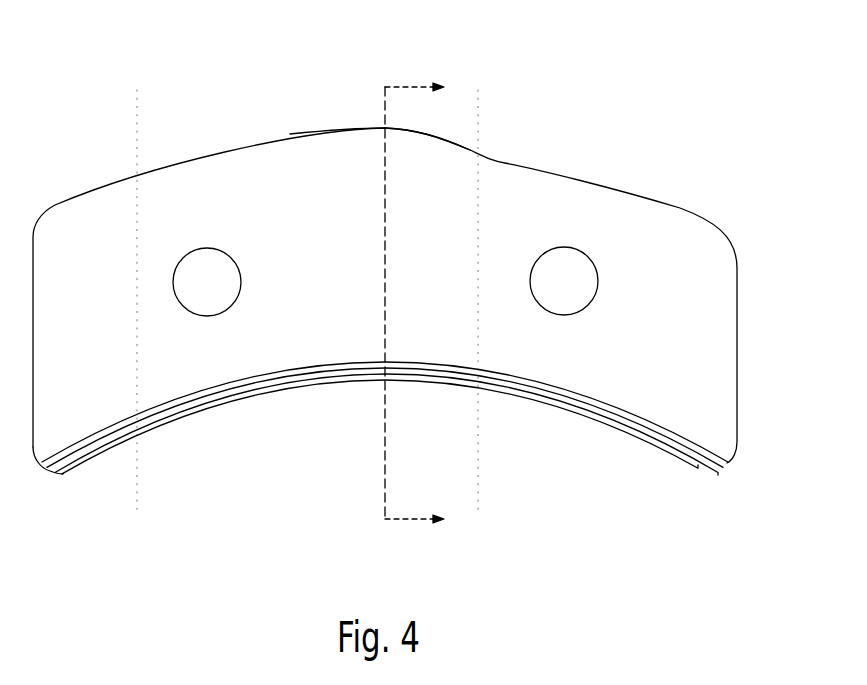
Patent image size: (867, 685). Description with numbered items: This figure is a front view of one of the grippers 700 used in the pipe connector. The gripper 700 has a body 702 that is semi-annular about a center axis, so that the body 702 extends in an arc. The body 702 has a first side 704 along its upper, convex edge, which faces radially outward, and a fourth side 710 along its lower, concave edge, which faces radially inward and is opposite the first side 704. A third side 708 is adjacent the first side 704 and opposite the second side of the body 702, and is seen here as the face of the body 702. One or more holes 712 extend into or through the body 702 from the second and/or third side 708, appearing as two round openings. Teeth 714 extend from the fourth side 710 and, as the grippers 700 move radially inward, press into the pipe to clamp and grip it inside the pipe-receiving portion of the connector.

The gripper 700 is at (397, 282).
The body 702 is at (677, 211).
The first side 704 is at (355, 103).
The third side 708 is at (468, 263).
The fourth side 710 is at (360, 391).
The holes 712 is at (208, 281).
The teeth 714 is at (622, 425).